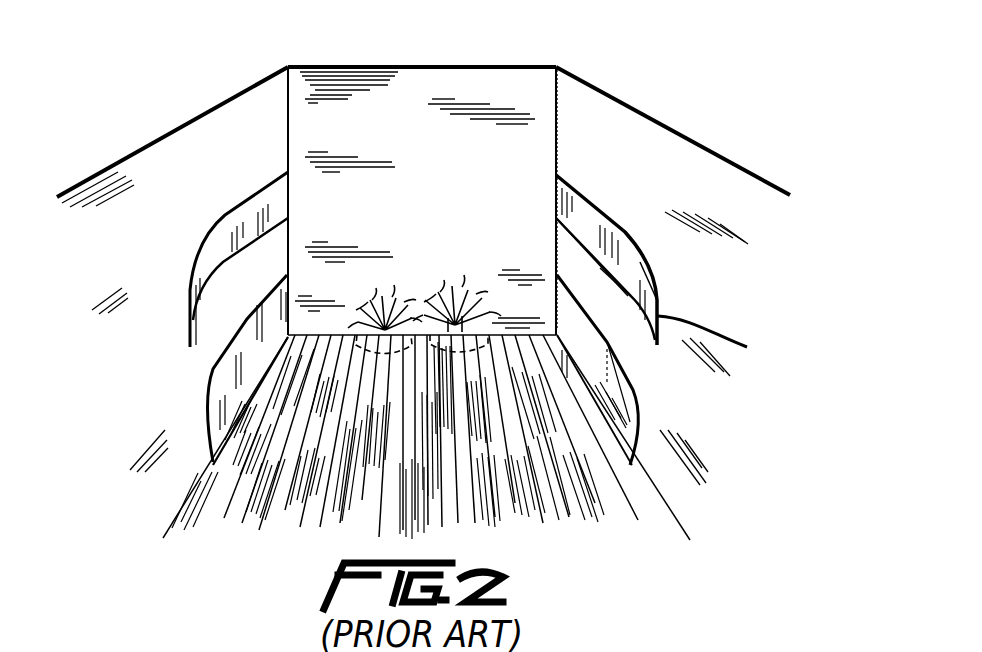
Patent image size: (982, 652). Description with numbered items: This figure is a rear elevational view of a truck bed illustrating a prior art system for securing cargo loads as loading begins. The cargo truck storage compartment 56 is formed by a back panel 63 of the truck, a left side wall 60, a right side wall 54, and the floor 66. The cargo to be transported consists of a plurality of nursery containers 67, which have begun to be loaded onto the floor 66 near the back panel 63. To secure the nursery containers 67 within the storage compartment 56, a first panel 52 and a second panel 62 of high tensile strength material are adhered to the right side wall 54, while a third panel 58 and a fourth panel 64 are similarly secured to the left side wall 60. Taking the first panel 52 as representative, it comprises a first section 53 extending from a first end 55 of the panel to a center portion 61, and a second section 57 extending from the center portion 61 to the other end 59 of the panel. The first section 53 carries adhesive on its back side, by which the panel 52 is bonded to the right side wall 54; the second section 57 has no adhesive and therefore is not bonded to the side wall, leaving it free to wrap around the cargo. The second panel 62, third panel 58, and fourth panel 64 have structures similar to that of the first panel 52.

The first panel 52 is at (603, 187).
The first section 53 is at (575, 223).
The right side wall 54 is at (630, 125).
The first end 55 is at (553, 190).
The cargo truck storage compartment 56 is at (368, 95).
The second section 57 is at (630, 269).
The third panel 58 is at (258, 192).
The other end 59 is at (745, 346).
The left side wall 60 is at (180, 154).
The center portion 61 is at (622, 252).
The second panel 62 is at (612, 329).
The back panel 63 is at (457, 75).
The fourth panel 64 is at (243, 319).
The floor 66 is at (325, 440).
The nursery containers 67 is at (453, 303).